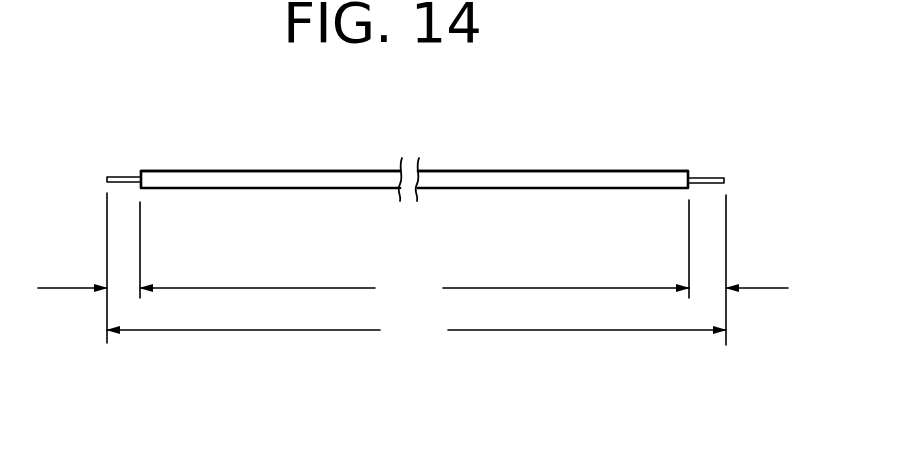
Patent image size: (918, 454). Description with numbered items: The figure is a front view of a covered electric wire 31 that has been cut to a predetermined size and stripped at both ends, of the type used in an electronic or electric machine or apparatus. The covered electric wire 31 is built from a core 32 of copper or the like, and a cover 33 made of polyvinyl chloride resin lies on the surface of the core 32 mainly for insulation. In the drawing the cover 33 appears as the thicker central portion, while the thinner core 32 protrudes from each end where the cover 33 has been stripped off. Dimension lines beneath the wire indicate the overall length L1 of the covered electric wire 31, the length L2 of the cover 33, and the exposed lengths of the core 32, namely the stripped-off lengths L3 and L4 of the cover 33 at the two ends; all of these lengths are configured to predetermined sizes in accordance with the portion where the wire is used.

The covered electric wire 31 is at (355, 171).
The core 32 is at (123, 175).
The cover 33 is at (302, 173).
The length of the covered electric wire L1 is at (416, 333).
The length of the cover L2 is at (414, 289).
The stripped-off length of the cover L3 is at (127, 288).
The stripped-off length of the cover L4 is at (706, 288).